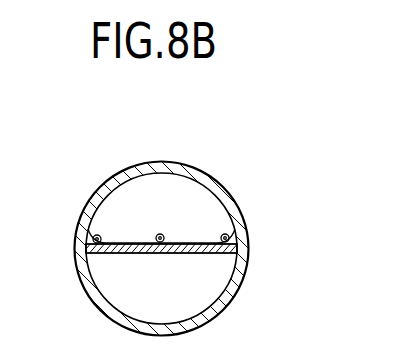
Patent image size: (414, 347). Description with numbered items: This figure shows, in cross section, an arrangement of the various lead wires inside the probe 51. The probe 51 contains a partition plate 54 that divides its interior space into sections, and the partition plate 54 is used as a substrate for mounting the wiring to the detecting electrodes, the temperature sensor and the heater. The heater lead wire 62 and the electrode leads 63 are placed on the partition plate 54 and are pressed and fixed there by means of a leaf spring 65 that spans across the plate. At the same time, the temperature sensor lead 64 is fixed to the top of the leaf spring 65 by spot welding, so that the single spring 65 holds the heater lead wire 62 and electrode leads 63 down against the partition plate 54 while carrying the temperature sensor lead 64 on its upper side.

The probe 51 is at (96, 314).
The partition plate 54 is at (186, 254).
The heater lead wire 62 is at (228, 234).
The electrode leads 63 is at (82, 217).
The temperature sensor lead 64 is at (160, 233).
The leaf spring 65 is at (100, 236).